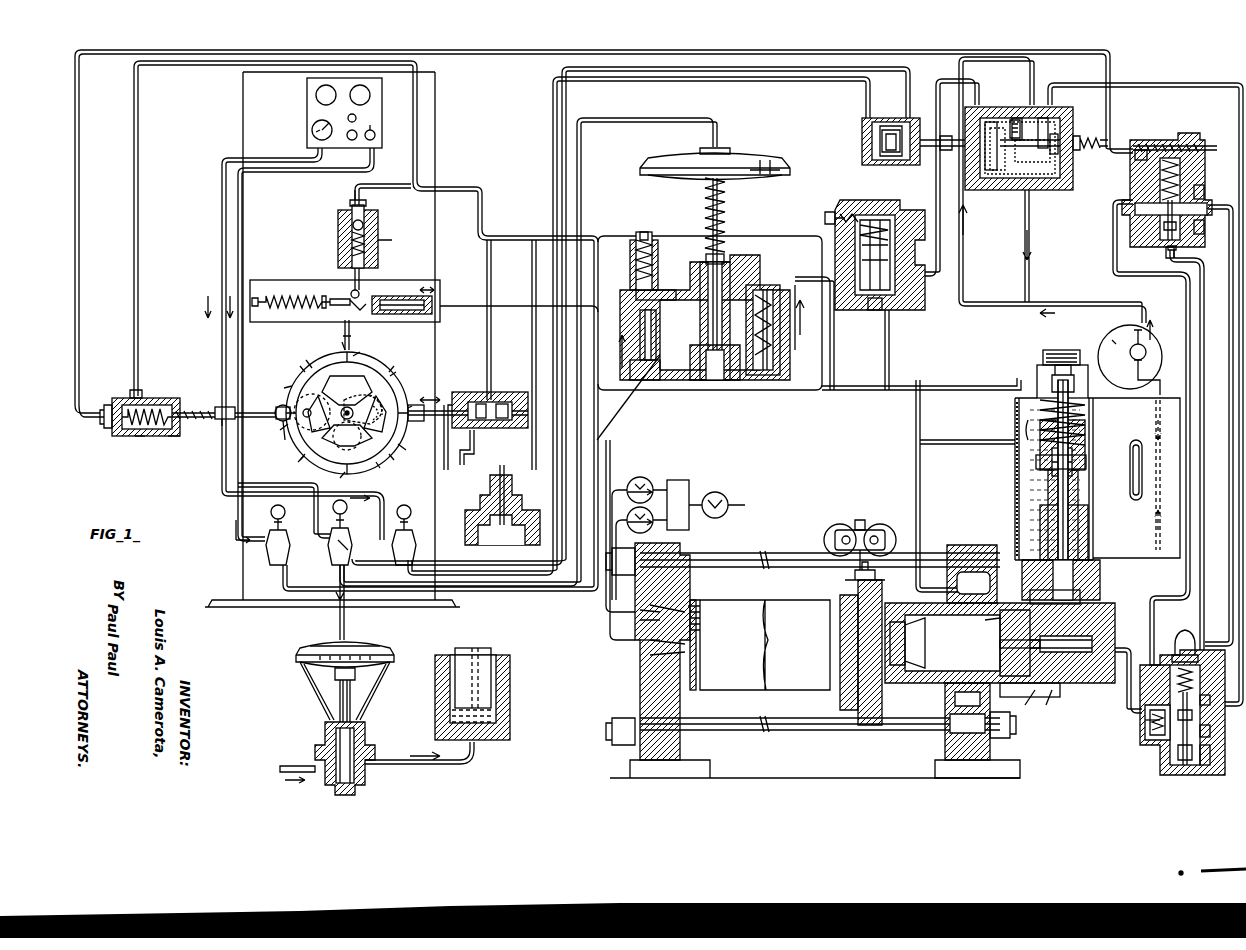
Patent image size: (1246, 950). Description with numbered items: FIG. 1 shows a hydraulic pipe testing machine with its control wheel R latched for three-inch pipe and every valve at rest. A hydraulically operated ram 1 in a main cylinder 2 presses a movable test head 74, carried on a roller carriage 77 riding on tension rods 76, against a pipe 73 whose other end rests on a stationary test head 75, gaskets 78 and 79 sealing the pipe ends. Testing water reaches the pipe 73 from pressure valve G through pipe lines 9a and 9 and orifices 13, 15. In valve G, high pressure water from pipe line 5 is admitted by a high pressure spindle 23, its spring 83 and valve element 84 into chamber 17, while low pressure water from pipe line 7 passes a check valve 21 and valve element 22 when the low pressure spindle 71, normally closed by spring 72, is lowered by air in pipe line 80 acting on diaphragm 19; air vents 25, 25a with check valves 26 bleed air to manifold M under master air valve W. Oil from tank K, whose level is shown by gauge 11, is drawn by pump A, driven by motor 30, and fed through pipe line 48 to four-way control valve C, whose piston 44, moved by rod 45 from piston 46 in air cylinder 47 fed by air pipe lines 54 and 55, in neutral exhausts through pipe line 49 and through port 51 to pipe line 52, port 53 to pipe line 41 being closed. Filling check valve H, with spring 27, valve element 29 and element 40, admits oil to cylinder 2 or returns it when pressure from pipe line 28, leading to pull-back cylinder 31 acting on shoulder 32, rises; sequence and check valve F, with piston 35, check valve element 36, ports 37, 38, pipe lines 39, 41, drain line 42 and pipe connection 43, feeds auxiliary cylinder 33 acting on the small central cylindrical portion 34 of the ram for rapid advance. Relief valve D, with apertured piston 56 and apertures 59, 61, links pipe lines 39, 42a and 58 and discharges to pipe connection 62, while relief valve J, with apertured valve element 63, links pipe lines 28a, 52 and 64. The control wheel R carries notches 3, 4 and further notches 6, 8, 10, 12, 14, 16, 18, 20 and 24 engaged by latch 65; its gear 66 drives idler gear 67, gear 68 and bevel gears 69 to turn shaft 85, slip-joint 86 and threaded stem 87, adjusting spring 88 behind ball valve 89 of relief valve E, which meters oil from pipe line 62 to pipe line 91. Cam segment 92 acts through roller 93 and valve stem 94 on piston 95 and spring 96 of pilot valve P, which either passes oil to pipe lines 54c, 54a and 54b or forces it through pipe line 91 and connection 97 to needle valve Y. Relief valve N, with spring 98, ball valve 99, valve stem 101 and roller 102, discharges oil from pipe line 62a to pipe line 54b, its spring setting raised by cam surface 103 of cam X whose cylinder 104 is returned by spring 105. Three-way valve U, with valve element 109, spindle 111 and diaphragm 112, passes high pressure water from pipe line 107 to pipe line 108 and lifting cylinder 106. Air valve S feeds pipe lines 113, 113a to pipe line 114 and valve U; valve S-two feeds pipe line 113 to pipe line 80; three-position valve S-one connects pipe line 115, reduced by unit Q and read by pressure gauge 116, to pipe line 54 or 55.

The pump casing 1 is at (1028, 705).
The pump casing part 2 is at (1049, 705).
The cam dial graduation 3 is at (337, 340).
The cam dial graduation 4 is at (305, 355).
The drain port 5 is at (619, 358).
The cam dial graduation 6 is at (283, 387).
The pipe 7 is at (797, 352).
The cam dial graduation 8 is at (279, 432).
The pipe 9 is at (472, 306).
The pipe 9a is at (628, 400).
The cam dial graduation 10 is at (295, 464).
The reservoir 11 is at (1136, 440).
The cam dial graduation 12 is at (341, 482).
The pump end plate 13 is at (668, 652).
The cam dial graduation 14 is at (387, 470).
The pump plate 15 is at (690, 644).
The cam dial graduation 16 is at (411, 452).
The valve stem 17 is at (663, 335).
The cam dial graduation 18 is at (420, 406).
The diaphragm 19 is at (750, 150).
The cam dial graduation 20 is at (403, 365).
The valve 21 is at (768, 366).
The valve body 22 is at (700, 358).
The valve 23 is at (645, 371).
The cam dial graduation 24 is at (366, 344).
The pipe 25 is at (606, 612).
The pipe 25a is at (610, 632).
The check valves 26 is at (630, 486).
The spring 27 is at (1085, 416).
The pipe 28 is at (952, 444).
The pipe 28a is at (831, 344).
The valve seat 29 is at (1082, 594).
The pipe 30 is at (1112, 340).
The pump cylinder 31 is at (950, 622).
The pump piston 32 is at (985, 622).
The pump chamber 33 is at (1044, 688).
The pump piston rod 34 is at (1000, 646).
The valve port 35 is at (1210, 755).
The valve port 36 is at (1145, 735).
The valve port 37 is at (1210, 700).
The valve port 38 is at (1210, 730).
The pipe 39 is at (1229, 235).
The piston 40 is at (1086, 460).
The pipe 41 is at (1172, 83).
The pipe 42 is at (1204, 586).
The pipe connection 42a is at (1170, 258).
The pipe 43 is at (1134, 648).
The spring 44 is at (1058, 140).
The piston 45 is at (982, 118).
The piston 46 is at (890, 128).
The cylinder 47 is at (862, 142).
The pipe 48 is at (1034, 68).
The pipe 49 is at (1029, 270).
The valve 51 is at (1016, 118).
The pipe 52 is at (970, 90).
The valve 53 is at (1045, 116).
The pipe 54 is at (553, 108).
The pipe 54a is at (532, 272).
The pipe 54b is at (510, 236).
The pipe 54c is at (470, 447).
The pipe 55 is at (566, 102).
The valve port 56 is at (1208, 226).
The pipe 58 is at (1113, 262).
The valve port 59 is at (1206, 192).
The valve port 61 is at (1135, 170).
The pipe 62 is at (80, 292).
The pipe 62a is at (383, 197).
The valve port 63 is at (895, 305).
The pipe 64 is at (889, 344).
The pointer 65 is at (343, 334).
The cam 66 is at (347, 441).
The cam 67 is at (312, 407).
The cam follower 68 is at (276, 409).
The link 69 is at (281, 440).
The valve stem 71 is at (724, 256).
The spring 72 is at (726, 212).
The motor 73 is at (765, 645).
The pump plate 74 is at (852, 700).
The pump plate 75 is at (648, 688).
The tie rods 76 is at (772, 553).
The roller 77 is at (850, 530).
The support 78 is at (845, 586).
The plate 79 is at (696, 596).
The pipe 80 is at (648, 118).
The spring 83 is at (658, 258).
The lever 84 is at (660, 300).
The rod 85 is at (262, 420).
The coupling 86 is at (222, 426).
The valve body 87 is at (176, 436).
The valve body 88 is at (140, 436).
The valve port 89 is at (130, 394).
The pipe 91 is at (216, 61).
The cam 92 is at (380, 398).
The cam 93 is at (380, 417).
The rod 94 is at (430, 420).
The piston 95 is at (480, 400).
The spring 96 is at (510, 400).
The pipe 97 is at (448, 472).
The spring 98 is at (380, 243).
The valve ball 99 is at (378, 222).
The valve stem 101 is at (338, 266).
The pivot 102 is at (352, 292).
The lever 103 is at (350, 302).
The cylinder 104 is at (410, 314).
The spring 105 is at (282, 298).
The tank 106 is at (506, 654).
The inlet 107 is at (298, 766).
The pipe 108 is at (448, 764).
The valve body 109 is at (355, 732).
The valve stem 111 is at (350, 700).
The diaphragm 112 is at (384, 650).
The pipe 113 is at (374, 156).
The pipe 113a is at (268, 483).
The pipe 114 is at (345, 628).
The pipe 115 is at (232, 158).
The gauge 116 is at (312, 130).